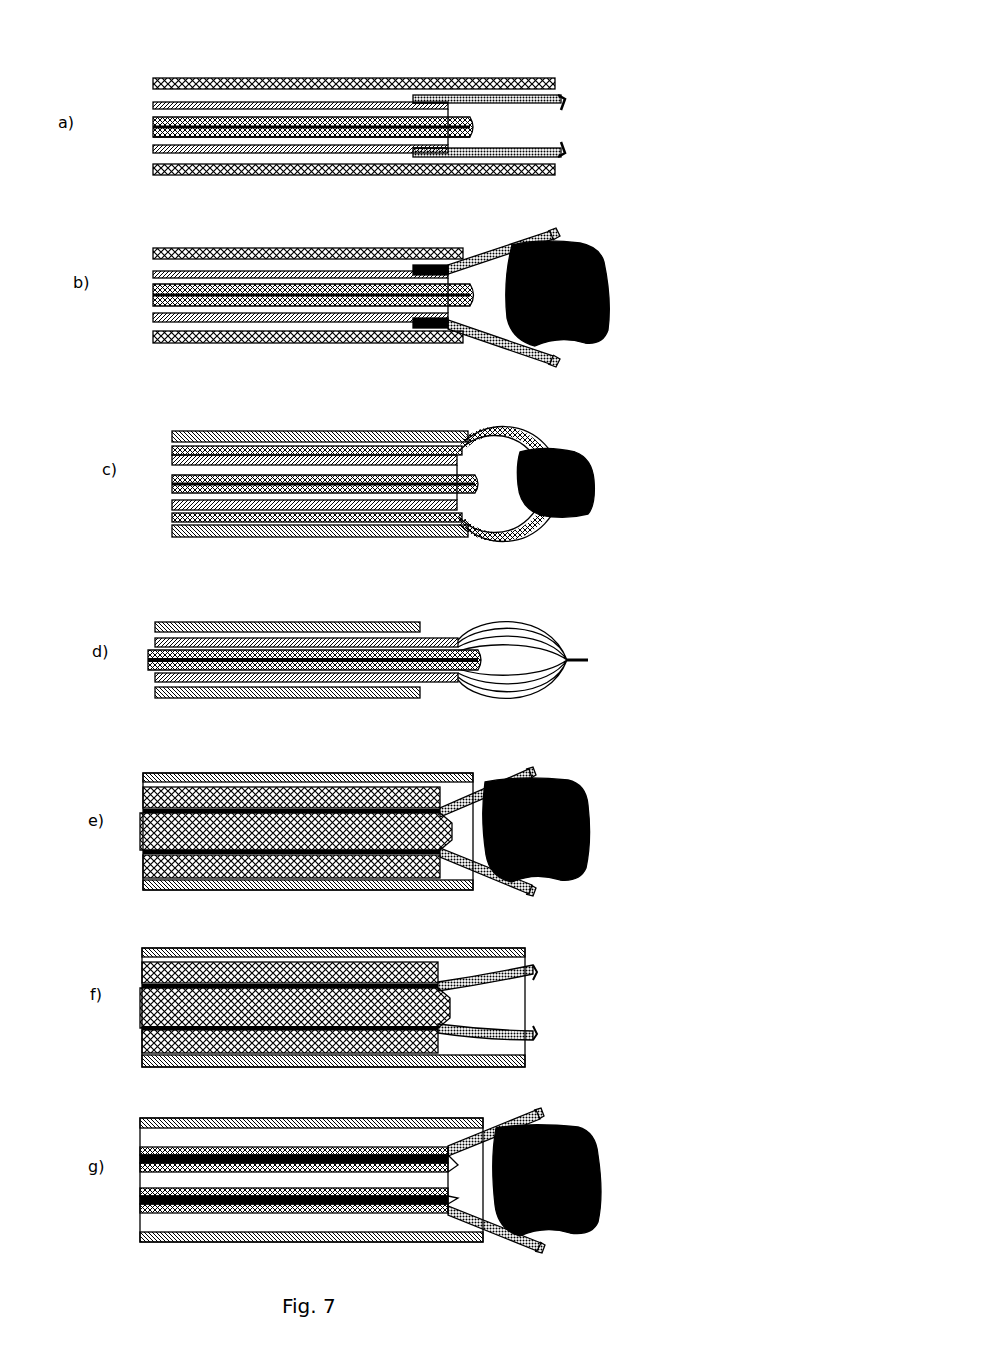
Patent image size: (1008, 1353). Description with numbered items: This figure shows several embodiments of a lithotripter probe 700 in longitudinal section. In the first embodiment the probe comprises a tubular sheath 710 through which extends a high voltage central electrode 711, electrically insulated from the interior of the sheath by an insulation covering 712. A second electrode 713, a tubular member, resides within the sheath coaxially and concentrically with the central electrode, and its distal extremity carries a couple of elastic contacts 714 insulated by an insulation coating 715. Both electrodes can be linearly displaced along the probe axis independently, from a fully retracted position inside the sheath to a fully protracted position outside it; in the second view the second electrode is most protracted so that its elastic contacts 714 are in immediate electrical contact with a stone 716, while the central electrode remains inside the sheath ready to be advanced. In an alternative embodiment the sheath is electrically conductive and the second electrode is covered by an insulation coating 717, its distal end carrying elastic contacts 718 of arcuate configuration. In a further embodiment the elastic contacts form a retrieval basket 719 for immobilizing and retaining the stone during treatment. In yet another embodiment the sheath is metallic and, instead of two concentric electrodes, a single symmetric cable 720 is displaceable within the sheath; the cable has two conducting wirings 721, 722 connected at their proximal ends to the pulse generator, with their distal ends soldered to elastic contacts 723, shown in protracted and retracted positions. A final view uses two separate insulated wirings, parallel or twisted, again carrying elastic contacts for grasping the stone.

The probe 700 is at (613, 115).
The tubular sheath 710 is at (320, 78).
The high voltage central electrode 711 is at (362, 137).
The insulation covering 712 is at (293, 128).
The second electrode 713 is at (365, 107).
The elastic contacts 714 is at (513, 93).
The insulation coating 715 is at (467, 167).
The stone 716 is at (600, 282).
The insulation coating 717 is at (312, 450).
The elastic contacts 718 is at (510, 428).
The retrieval basket 719 is at (567, 657).
The symmetric cable 720 is at (213, 777).
The conducting wiring 721 is at (347, 798).
The conducting wiring 722 is at (328, 857).
The elastic contacts 723 is at (500, 777).